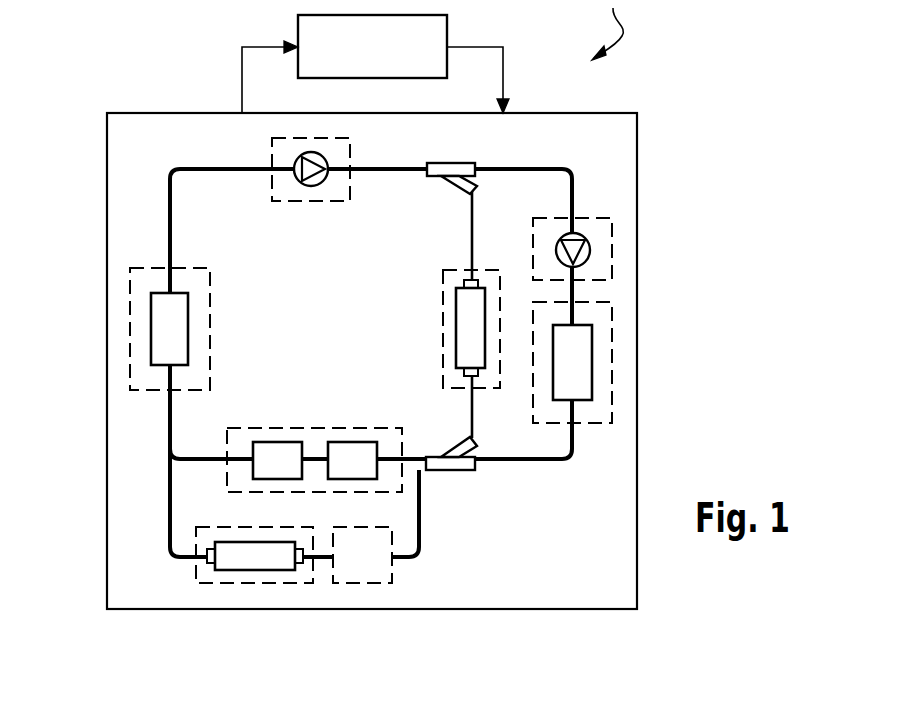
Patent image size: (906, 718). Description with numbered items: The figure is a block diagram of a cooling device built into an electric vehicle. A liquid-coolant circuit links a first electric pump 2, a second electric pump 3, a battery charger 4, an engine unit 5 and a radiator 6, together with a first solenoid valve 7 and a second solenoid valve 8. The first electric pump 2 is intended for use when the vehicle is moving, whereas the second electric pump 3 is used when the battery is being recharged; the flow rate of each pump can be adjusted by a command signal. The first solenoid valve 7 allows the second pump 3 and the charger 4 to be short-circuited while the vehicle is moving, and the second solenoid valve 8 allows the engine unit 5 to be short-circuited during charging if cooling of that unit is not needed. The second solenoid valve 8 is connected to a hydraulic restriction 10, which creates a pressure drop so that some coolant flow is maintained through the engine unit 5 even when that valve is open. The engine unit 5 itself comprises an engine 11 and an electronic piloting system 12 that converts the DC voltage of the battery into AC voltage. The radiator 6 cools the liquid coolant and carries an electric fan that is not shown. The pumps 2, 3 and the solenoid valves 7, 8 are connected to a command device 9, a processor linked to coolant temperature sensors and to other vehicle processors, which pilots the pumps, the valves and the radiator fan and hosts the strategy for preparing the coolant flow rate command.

The first electric pump 2 is at (350, 147).
The second electric pump 3 is at (612, 248).
The battery charger 4 is at (612, 360).
The engine unit 5 is at (314, 420).
The radiator 6 is at (130, 325).
The first solenoid valve 7 is at (443, 313).
The second solenoid valve 8 is at (240, 583).
The command device 9 is at (440, 30).
The hydraulic restriction 10 is at (373, 583).
The engine 11 is at (288, 449).
The electronic piloting system 12 is at (353, 449).